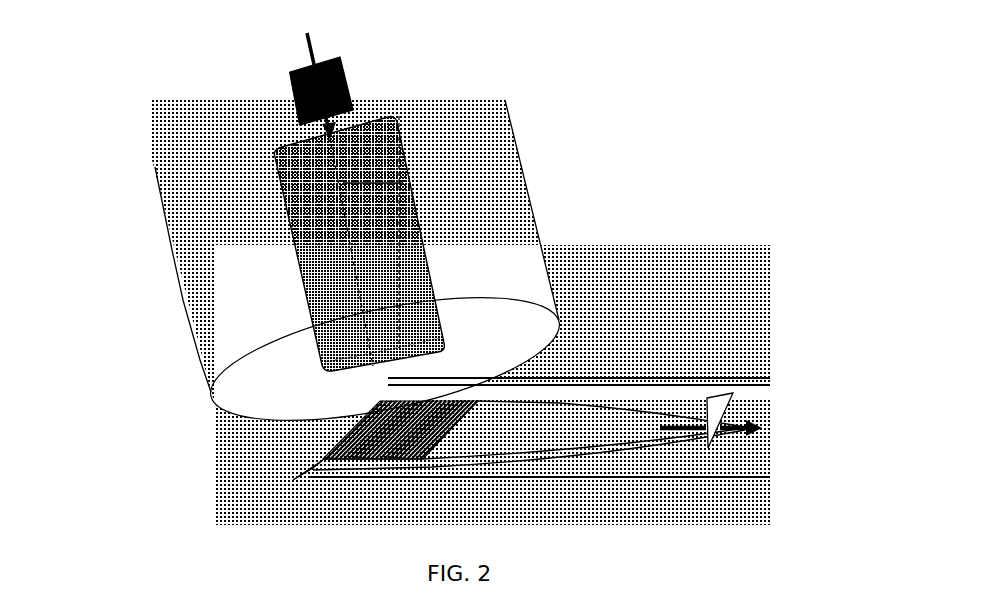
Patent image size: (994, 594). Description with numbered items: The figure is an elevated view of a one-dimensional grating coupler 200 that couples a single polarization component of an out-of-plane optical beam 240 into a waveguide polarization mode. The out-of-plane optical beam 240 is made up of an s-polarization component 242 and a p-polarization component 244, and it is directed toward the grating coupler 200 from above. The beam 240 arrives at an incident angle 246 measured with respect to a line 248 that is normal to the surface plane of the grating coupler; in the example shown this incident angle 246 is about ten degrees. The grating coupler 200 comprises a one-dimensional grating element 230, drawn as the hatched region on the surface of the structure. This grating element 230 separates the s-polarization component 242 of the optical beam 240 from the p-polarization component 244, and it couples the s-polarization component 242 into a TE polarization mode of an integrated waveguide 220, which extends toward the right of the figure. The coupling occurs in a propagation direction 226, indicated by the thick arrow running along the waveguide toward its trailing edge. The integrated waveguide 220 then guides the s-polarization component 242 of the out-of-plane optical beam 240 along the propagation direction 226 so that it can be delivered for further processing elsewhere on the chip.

The 1D grating coupler 200 is at (118, 89).
The integrated waveguide 220 is at (607, 420).
The propagation direction 226 is at (748, 420).
The 1D grating element 230 is at (313, 464).
The out-of-plane optical beam 240 is at (307, 47).
The s-polarization component 242 is at (325, 58).
The p-polarization component 244 is at (290, 98).
The incident angle 246 is at (348, 205).
The line normal to the grating coupler surface plane 248 is at (395, 288).